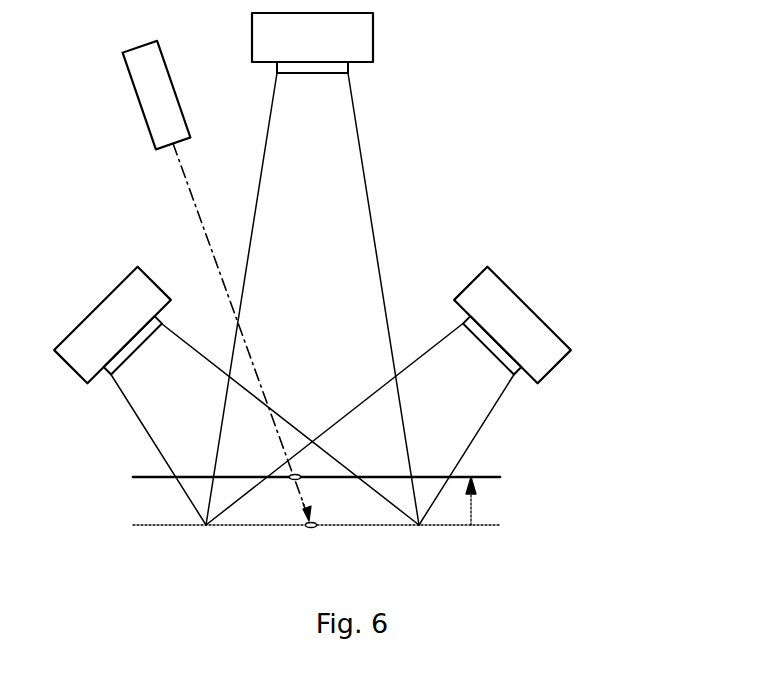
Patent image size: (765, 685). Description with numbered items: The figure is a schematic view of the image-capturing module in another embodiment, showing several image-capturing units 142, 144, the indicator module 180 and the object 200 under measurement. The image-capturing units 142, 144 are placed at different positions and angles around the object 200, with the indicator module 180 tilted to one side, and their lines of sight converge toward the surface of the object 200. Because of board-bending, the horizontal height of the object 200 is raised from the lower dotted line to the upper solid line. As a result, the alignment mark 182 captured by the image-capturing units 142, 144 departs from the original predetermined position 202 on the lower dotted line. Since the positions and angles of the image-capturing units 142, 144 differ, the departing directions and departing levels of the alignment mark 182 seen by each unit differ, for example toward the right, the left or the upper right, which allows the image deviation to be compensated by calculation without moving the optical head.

The image-capturing unit 142 is at (90, 312).
The image-capturing unit 144 is at (373, 48).
The indicator module 180 is at (130, 80).
The alignment mark 182 is at (294, 480).
The object under measurement 200 is at (485, 476).
The original predetermined position 202 is at (316, 527).